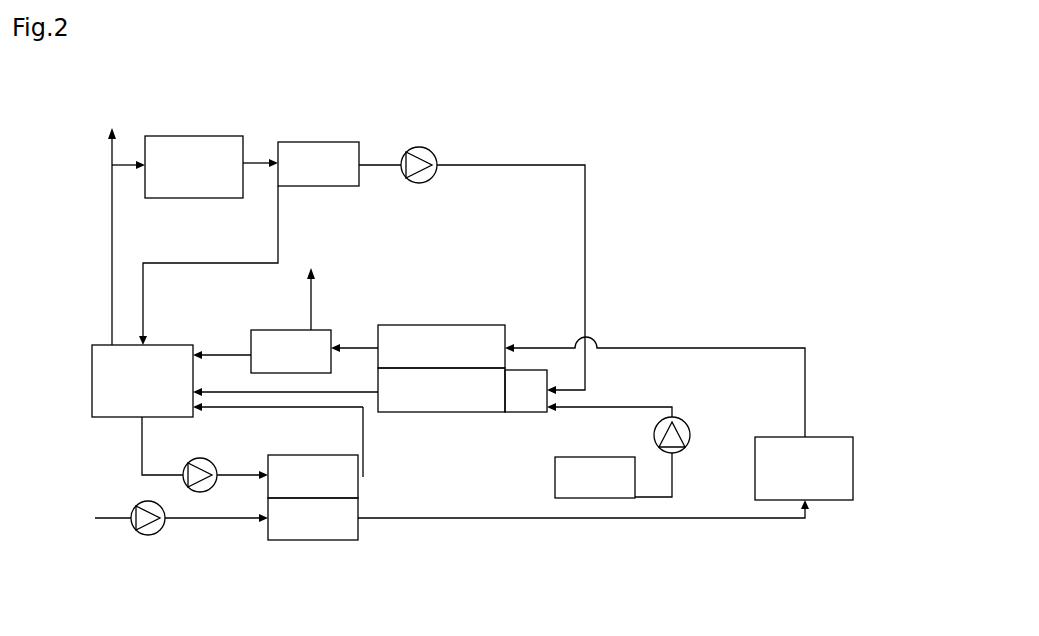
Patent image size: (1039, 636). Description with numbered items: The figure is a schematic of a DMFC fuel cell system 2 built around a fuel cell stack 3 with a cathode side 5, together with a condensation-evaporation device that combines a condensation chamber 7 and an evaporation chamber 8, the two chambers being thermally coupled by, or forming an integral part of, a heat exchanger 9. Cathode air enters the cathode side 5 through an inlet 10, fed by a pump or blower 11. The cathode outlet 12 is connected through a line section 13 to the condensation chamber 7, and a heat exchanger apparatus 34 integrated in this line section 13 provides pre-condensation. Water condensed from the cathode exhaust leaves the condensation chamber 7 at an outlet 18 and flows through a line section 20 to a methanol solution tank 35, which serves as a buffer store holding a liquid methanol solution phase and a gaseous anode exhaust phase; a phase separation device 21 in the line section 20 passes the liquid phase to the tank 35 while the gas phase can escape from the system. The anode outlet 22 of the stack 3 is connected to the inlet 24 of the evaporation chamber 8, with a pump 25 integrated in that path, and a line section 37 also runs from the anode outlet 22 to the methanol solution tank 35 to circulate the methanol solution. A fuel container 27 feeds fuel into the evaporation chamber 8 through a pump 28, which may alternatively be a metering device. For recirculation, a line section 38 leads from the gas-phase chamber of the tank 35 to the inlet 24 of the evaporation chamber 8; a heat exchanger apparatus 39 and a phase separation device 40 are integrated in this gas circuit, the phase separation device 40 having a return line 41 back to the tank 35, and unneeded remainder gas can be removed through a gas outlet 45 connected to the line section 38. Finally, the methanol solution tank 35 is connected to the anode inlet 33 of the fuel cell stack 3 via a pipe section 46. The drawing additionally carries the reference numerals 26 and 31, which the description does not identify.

The DMFC fuel cell system 2 is at (611, 87).
The fuel cell stack 3 is at (312, 542).
The cathode side 5 is at (322, 533).
The condensation chamber 7 is at (450, 361).
The evaporation chamber 8 is at (450, 404).
The heat exchanger 9 is at (322, 490).
The inlet 10 is at (263, 523).
The pump or blower 11 is at (140, 531).
The cathode outlet 12 is at (357, 525).
The line section 13 is at (523, 520).
The outlet of the condensation chamber 18 is at (378, 348).
The line section 20 is at (213, 357).
The phase separation device 21 is at (305, 366).
The anode outlet 22 is at (363, 470).
The inlet of the evaporation chamber 24 is at (510, 388).
The pump 25 is at (627, 410).
The valve 26 is at (523, 400).
The fuel container 27 is at (608, 493).
The pump 28 is at (688, 432).
The control line 31 is at (110, 237).
The anode inlet 33 is at (260, 472).
The heat exchanger apparatus 34 is at (818, 485).
The methanol solution tank 35 is at (156, 399).
The line section 37 is at (273, 412).
The line section 38 is at (460, 163).
The heat exchanger apparatus 39 is at (208, 181).
The phase separation device 40 is at (332, 178).
The return line 41 is at (278, 223).
The gas outlet 45 is at (108, 149).
The pipe section 46 is at (142, 451).